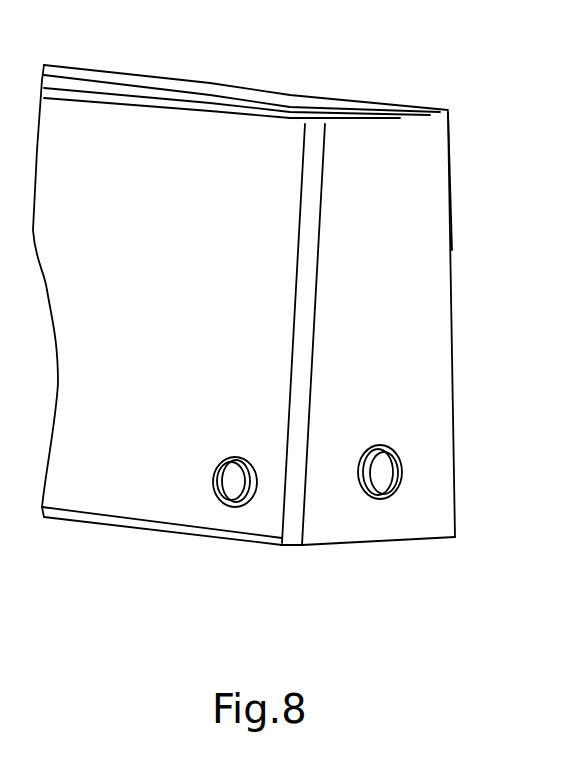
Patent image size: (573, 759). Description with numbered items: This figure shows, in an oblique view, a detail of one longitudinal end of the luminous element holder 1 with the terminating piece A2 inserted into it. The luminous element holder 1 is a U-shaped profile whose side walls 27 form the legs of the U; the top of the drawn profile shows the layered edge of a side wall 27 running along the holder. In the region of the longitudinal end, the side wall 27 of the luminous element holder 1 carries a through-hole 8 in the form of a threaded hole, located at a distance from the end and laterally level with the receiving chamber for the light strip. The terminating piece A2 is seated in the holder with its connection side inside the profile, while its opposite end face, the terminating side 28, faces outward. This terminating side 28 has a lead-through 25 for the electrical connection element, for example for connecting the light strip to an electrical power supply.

The luminous element holder 1 is at (140, 483).
The through-hole 8 is at (235, 455).
The lead-through 25 is at (392, 495).
The side wall 27 is at (130, 123).
The terminating side 28 is at (418, 377).
The terminating piece A2 is at (450, 148).